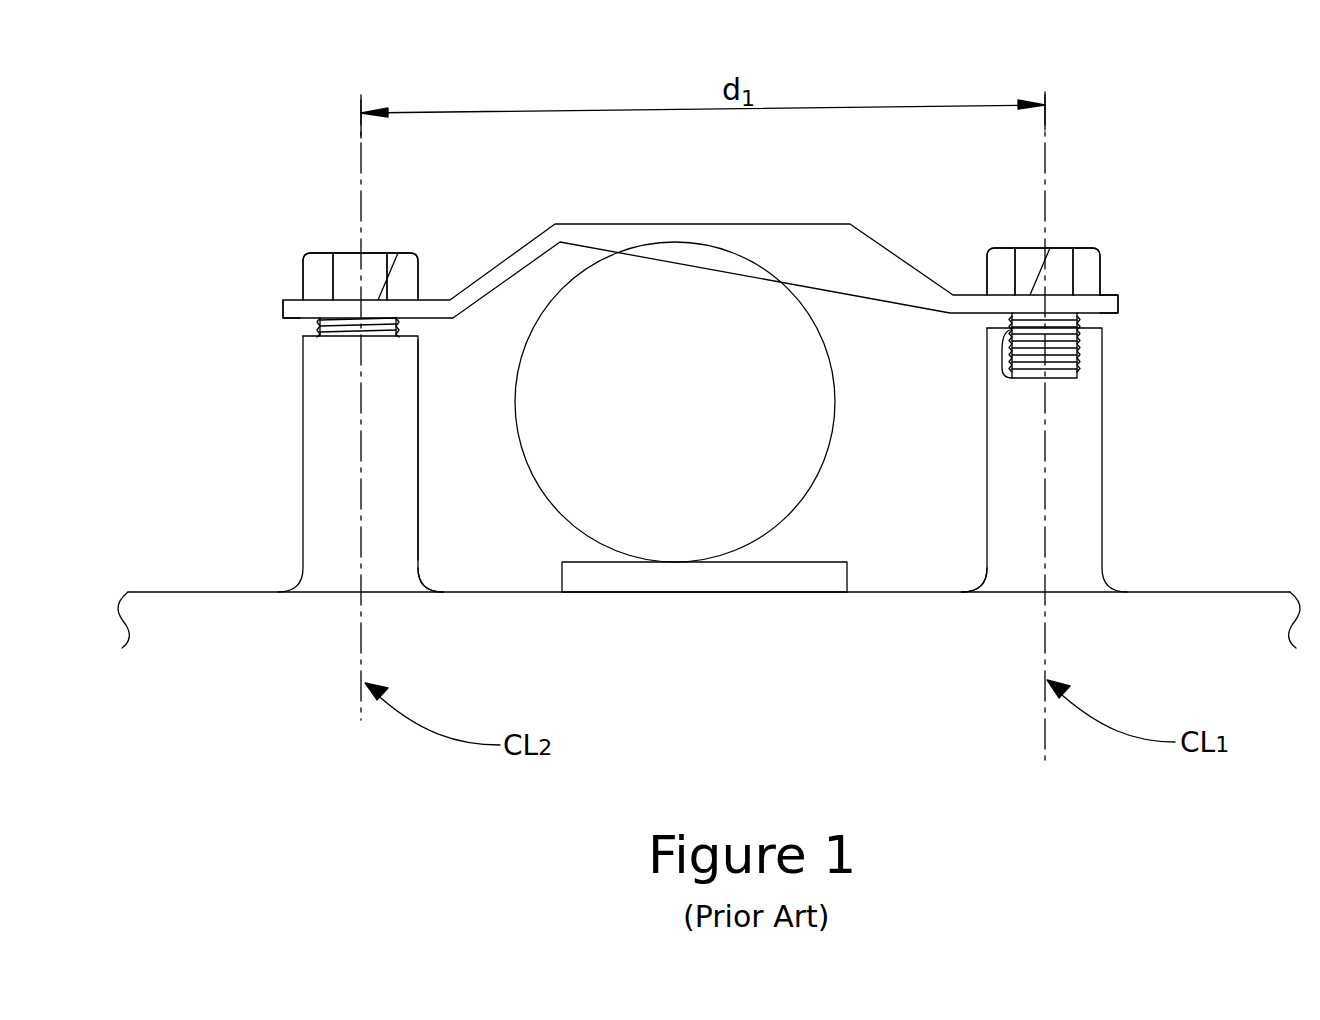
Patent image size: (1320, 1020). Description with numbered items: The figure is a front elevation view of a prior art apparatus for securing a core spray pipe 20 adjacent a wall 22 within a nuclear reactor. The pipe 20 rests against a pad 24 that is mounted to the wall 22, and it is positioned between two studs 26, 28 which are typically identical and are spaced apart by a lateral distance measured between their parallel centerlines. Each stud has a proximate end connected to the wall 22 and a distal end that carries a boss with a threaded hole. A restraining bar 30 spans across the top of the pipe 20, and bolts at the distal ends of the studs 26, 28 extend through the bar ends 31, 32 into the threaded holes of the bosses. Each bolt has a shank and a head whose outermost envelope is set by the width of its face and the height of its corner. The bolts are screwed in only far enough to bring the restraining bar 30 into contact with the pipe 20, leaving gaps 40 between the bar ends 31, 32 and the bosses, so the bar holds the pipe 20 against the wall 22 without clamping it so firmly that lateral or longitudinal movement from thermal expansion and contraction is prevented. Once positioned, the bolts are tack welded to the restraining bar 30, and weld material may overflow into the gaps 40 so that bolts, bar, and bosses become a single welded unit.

The core spray pipe 20 is at (833, 366).
The wall 22 is at (875, 595).
The pad 24 is at (640, 575).
The stud 26 is at (275, 556).
The stud 28 is at (1078, 612).
The restraining bar 30 is at (728, 224).
The bar end 31 is at (300, 312).
The bar end 32 is at (1105, 305).
The gap 40 is at (308, 327).